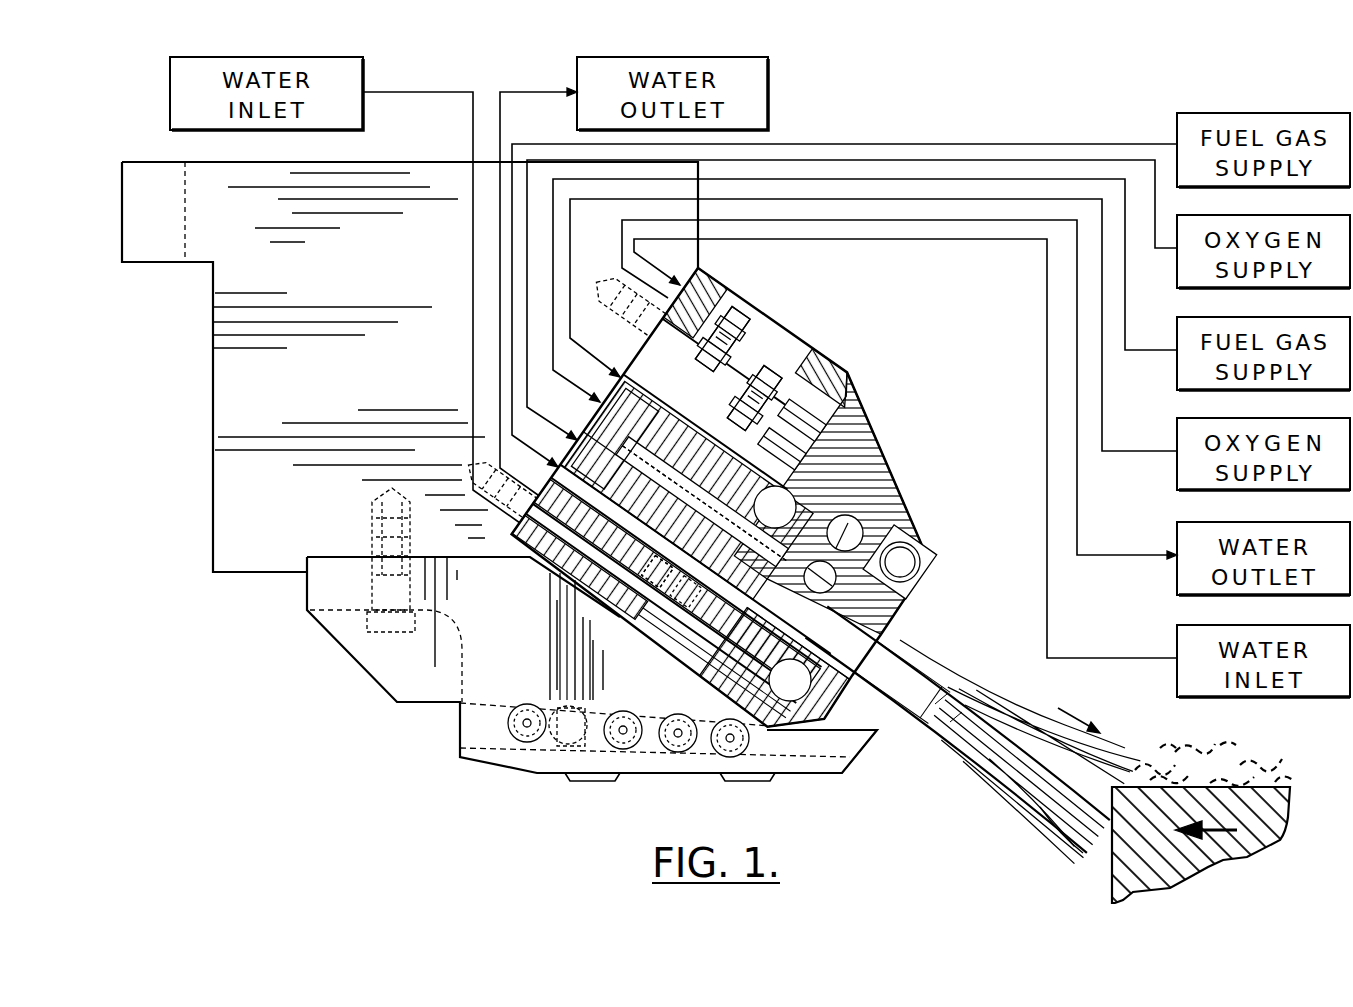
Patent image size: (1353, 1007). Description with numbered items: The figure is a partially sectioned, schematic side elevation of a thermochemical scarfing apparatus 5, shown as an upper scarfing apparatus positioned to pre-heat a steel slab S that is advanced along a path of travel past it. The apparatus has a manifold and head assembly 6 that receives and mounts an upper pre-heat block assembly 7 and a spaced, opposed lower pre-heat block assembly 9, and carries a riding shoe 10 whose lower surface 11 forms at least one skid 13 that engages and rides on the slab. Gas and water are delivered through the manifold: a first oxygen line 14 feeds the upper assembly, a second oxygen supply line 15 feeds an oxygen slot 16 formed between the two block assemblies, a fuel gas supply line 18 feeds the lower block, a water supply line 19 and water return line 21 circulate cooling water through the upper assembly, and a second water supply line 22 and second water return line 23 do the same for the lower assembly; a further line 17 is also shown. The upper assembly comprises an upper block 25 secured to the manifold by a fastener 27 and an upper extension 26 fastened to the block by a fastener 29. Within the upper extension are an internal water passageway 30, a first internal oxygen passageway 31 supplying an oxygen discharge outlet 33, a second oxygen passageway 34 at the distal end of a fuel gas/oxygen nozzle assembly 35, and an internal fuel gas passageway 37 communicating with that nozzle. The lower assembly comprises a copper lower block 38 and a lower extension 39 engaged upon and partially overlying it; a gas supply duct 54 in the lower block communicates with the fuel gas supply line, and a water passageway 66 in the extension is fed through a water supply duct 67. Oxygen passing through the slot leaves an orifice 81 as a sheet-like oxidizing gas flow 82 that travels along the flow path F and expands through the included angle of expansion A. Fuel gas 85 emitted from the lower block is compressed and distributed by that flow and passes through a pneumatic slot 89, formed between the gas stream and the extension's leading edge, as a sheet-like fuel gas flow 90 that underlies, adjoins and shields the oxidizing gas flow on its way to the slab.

The thermochemical scarfing apparatus 5 is at (820, 130).
The manifold and head assembly 6 is at (316, 286).
The upper pre-heat block assembly 7 is at (828, 328).
The lower pre-heat block assembly 9 is at (583, 597).
The riding shoe 10 is at (493, 657).
The lower surface 11 is at (650, 777).
The skid 13 is at (768, 788).
The first oxygen line 14 is at (571, 259).
The second oxygen supply line 15 is at (527, 397).
The oxygen slot 16 is at (583, 430).
The fuel gas supply line 17 is at (553, 223).
The fuel gas supply line 18 is at (512, 355).
The water supply line 19 is at (762, 222).
The water return line 21 is at (840, 200).
The second water supply line 22 is at (473, 113).
The second water return line 23 is at (500, 113).
The upper block 25 is at (618, 360).
The upper extension 26 is at (880, 440).
The fastener 27 is at (713, 360).
The fastener 29 is at (751, 377).
The internal water passageway 30 is at (907, 540).
The first internal oxygen passageway 31 is at (848, 523).
The oxygen discharge outlet 33 is at (924, 558).
The second oxygen passageway 34 is at (762, 521).
The fuel gas/oxygen nozzle assembly 35 is at (850, 597).
The internal fuel gas passageway 37 is at (862, 520).
The lower block 38 is at (567, 595).
The lower extension 39 is at (834, 700).
The gas supply duct 54 is at (714, 412).
The water passageway 66 is at (777, 694).
The water supply duct 67 is at (740, 650).
The orifice 81 is at (920, 625).
The sheet-like oxidizing gas flow 82 is at (993, 735).
The fuel gas 85 is at (692, 640).
The pneumatic slot 89 is at (863, 687).
The sheet-like fuel gas flow 90 is at (1014, 786).
The included angle of expansion A is at (948, 708).
The flow path F is at (1079, 710).
The steel slab S is at (1207, 868).